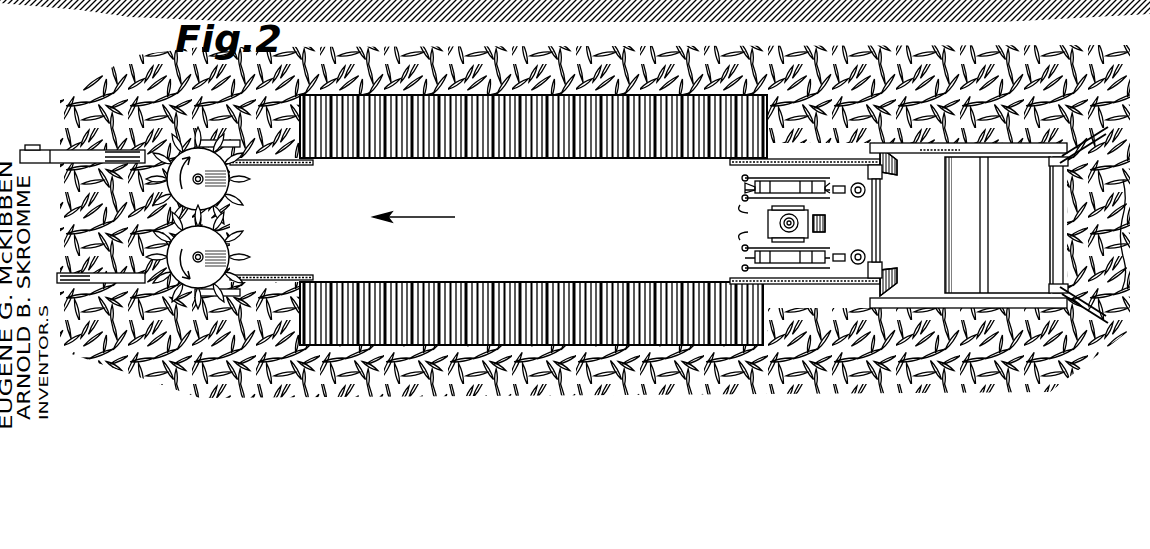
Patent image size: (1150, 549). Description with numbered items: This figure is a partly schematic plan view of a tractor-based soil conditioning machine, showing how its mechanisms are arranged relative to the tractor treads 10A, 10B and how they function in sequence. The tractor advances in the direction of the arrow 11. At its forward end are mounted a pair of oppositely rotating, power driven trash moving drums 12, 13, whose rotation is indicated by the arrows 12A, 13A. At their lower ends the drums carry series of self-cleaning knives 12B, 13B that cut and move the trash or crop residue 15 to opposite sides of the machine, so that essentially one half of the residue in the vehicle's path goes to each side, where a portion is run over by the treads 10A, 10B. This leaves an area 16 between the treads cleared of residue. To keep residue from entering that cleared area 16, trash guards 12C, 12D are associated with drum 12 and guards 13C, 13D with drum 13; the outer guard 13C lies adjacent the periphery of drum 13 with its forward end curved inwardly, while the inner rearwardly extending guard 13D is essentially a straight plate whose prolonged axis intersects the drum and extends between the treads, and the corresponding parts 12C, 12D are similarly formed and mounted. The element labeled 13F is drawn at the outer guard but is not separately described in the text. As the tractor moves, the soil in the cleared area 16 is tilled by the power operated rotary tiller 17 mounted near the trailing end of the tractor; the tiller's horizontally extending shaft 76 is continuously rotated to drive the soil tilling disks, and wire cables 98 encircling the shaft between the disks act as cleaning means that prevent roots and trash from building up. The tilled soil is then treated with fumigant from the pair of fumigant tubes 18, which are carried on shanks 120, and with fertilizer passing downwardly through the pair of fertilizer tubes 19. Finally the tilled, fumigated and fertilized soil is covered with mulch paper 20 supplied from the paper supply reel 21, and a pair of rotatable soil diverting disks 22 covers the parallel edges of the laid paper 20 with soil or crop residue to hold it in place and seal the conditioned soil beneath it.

The tractor tread 10A is at (512, 258).
The tractor tread 10B is at (487, 153).
The forward direction arrow 11 is at (440, 202).
The trash moving drum 12 is at (190, 121).
The rotation direction arrow 12A is at (204, 185).
The self-cleaning knives 12B is at (240, 210).
The outer trash guard 12C is at (222, 140).
The inner trash guard 12D is at (300, 165).
The trash moving drum 13 is at (213, 257).
The rotation direction arrow 13A is at (202, 251).
The self-cleaning knives 13B is at (243, 260).
The outer trash guard 13C is at (227, 310).
The inner trash guard 13D is at (300, 275).
The cutter blade tip 13F is at (158, 8).
The crop residue 15 is at (907, 0).
The cleared area 16 is at (617, 233).
The rotary tiller 17 is at (766, 223).
The fumigant tube 18 is at (839, 193).
The fertilizer tube 19 is at (866, 191).
The mulch paper 20 is at (1015, 303).
The paper supply reel 21 is at (953, 272).
The soil diverting disk 22 is at (1098, 160).
The horizontally extending shaft 76 is at (789, 32).
The wire cables 98 is at (742, 198).
The shank 120 is at (840, 15).